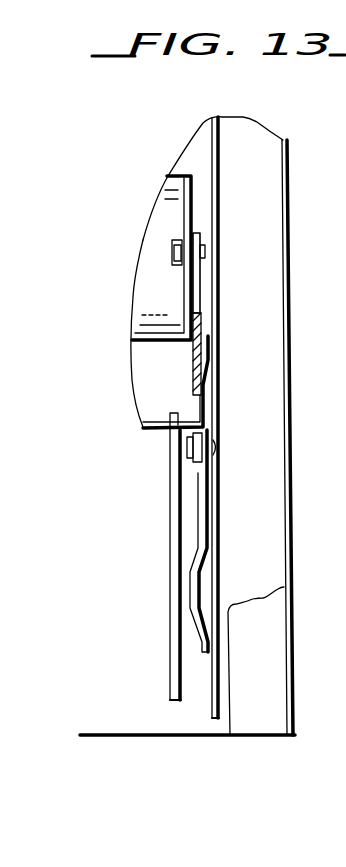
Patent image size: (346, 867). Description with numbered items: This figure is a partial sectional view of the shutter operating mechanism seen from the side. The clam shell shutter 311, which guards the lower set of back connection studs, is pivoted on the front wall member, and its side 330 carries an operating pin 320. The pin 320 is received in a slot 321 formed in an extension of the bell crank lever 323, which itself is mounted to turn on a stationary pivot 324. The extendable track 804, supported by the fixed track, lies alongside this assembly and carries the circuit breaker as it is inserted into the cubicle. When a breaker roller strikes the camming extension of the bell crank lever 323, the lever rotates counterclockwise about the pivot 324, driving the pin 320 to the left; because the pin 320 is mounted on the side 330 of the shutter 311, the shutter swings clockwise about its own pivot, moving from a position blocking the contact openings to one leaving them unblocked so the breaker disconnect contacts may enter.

The clam shell shutter 311 is at (148, 344).
The operating pin 320 is at (207, 253).
The slot 321 is at (198, 297).
The bell crank lever 323 is at (197, 366).
The stationary pivot 324 is at (218, 447).
The side of the shutter 330 is at (190, 210).
The extendable track 804 is at (190, 594).